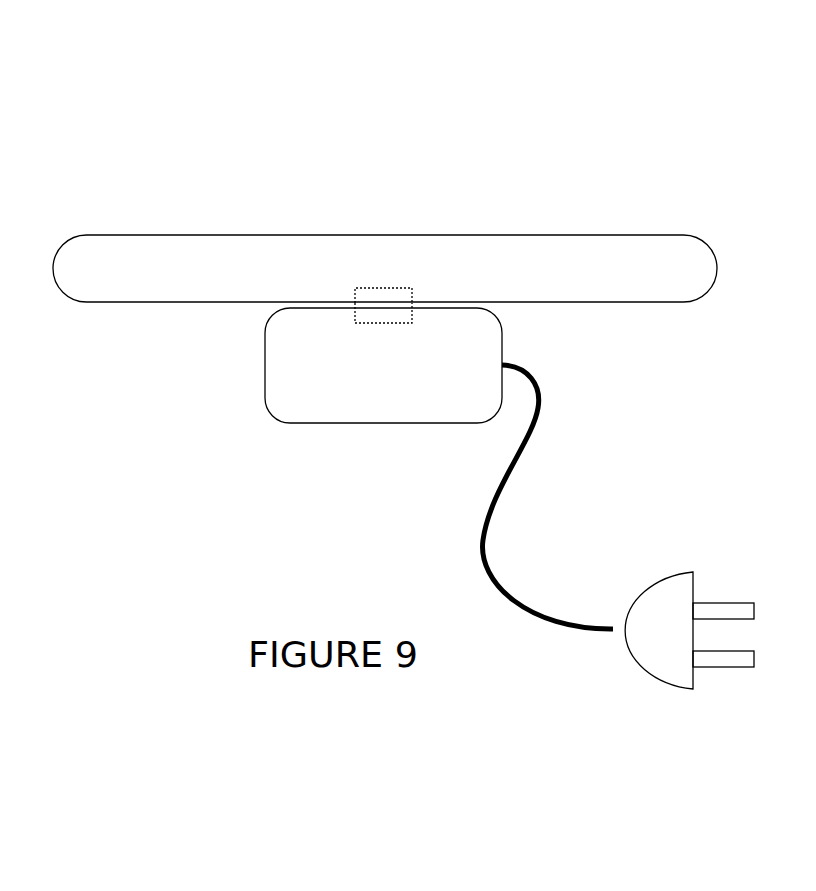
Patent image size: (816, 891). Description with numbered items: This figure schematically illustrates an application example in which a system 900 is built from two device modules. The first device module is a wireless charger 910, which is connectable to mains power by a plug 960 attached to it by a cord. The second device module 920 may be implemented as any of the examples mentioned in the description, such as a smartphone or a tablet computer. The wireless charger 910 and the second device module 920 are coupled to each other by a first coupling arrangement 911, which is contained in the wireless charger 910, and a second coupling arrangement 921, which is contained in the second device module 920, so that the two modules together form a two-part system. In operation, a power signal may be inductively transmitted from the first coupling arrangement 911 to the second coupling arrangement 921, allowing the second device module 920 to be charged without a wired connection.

The system 900 is at (162, 132).
The wireless charger 910 is at (326, 402).
The first coupling arrangement 911 is at (382, 323).
The second device module 920 is at (173, 282).
The second coupling arrangement 921 is at (382, 287).
The plug 960 is at (663, 665).